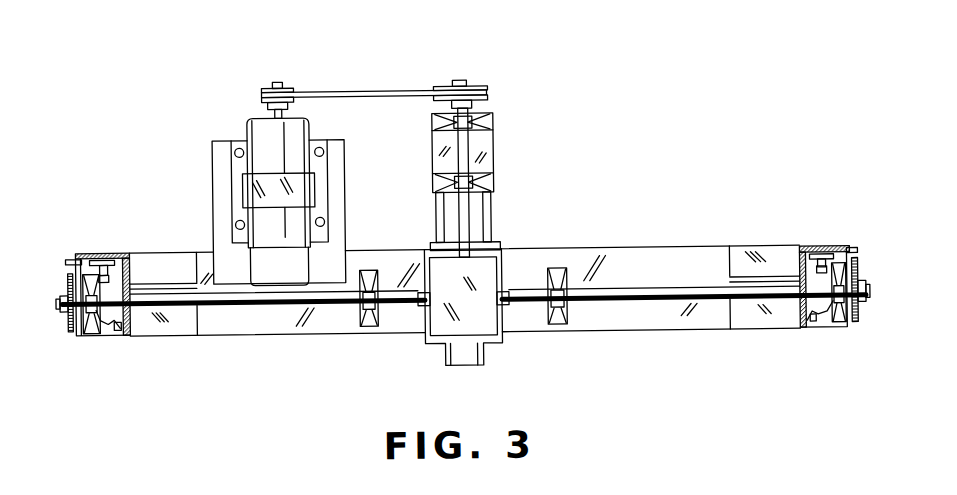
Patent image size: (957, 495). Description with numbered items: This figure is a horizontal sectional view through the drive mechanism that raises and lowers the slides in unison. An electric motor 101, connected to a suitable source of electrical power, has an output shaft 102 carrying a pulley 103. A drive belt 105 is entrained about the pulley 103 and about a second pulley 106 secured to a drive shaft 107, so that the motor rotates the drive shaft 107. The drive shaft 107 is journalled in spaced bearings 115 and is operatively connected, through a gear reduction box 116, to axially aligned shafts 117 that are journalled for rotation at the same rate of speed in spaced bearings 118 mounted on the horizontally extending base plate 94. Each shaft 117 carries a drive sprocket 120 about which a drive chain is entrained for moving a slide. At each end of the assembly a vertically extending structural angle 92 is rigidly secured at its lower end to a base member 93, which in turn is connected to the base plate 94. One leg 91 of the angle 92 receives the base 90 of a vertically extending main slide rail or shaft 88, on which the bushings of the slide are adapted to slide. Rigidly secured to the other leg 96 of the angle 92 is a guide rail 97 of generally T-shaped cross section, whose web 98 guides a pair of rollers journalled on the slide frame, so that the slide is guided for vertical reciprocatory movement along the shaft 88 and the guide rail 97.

The main slide rail or shaft 88 is at (104, 320).
The base 90 is at (118, 327).
The leg 91 is at (129, 310).
The structural angle 92 is at (119, 247).
The base member 93 is at (126, 280).
The base plate 94 is at (594, 255).
The leg 96 is at (70, 255).
The guide rail 97 is at (100, 258).
The web 98 is at (109, 275).
The electric motor 101 is at (309, 119).
The output shaft 102 is at (272, 104).
The pulley 103 is at (275, 86).
The drive belt 105 is at (360, 90).
The pulley 106 is at (478, 86).
The drive shaft 107 is at (471, 152).
The bearings 115 is at (491, 121).
The gear reduction box 116 is at (443, 327).
The shafts 117 is at (235, 307).
The bearings 118 is at (90, 330).
The drive sprocket 120 is at (68, 320).